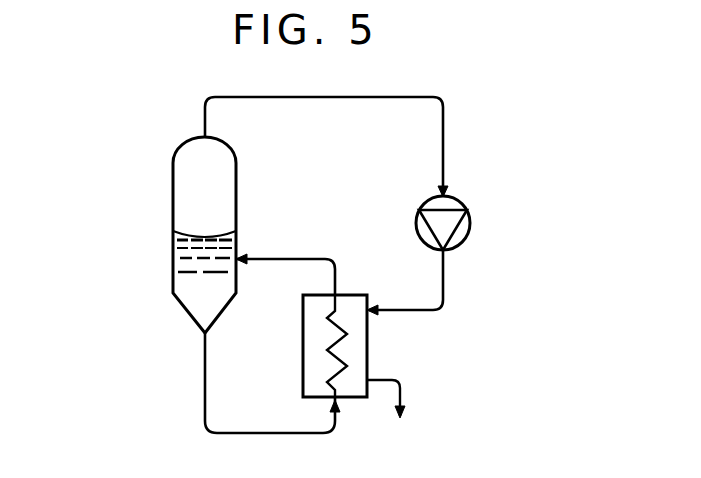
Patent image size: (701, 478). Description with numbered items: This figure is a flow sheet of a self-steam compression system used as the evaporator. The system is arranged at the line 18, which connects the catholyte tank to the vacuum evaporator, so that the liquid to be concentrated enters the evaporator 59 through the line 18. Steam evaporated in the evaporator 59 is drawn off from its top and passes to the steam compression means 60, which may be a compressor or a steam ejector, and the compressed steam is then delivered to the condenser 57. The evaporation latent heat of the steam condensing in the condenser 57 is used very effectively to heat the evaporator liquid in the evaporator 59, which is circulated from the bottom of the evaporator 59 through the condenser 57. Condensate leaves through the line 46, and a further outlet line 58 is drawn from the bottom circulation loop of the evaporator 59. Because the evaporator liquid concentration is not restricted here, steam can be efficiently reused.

The evaporator 59 is at (204, 235).
The steam compression means 60 is at (470, 226).
The condenser 57 is at (368, 347).
The line 18 is at (170, 259).
The outlet line 58 is at (205, 393).
The line 46 is at (390, 413).